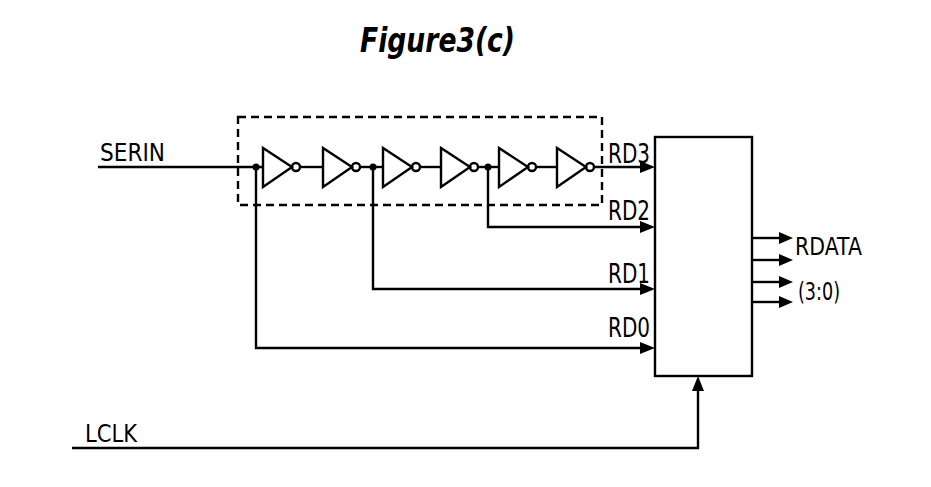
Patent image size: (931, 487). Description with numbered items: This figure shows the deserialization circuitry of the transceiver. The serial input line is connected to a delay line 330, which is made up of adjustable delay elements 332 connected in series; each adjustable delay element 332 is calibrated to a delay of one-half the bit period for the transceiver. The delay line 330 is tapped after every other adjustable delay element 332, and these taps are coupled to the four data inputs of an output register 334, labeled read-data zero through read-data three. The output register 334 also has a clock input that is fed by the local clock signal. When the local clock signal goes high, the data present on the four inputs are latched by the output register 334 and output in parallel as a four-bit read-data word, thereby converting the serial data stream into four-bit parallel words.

The delay line 330 is at (425, 147).
The adjustable delay element 332 is at (429, 154).
The output register 334 is at (703, 242).